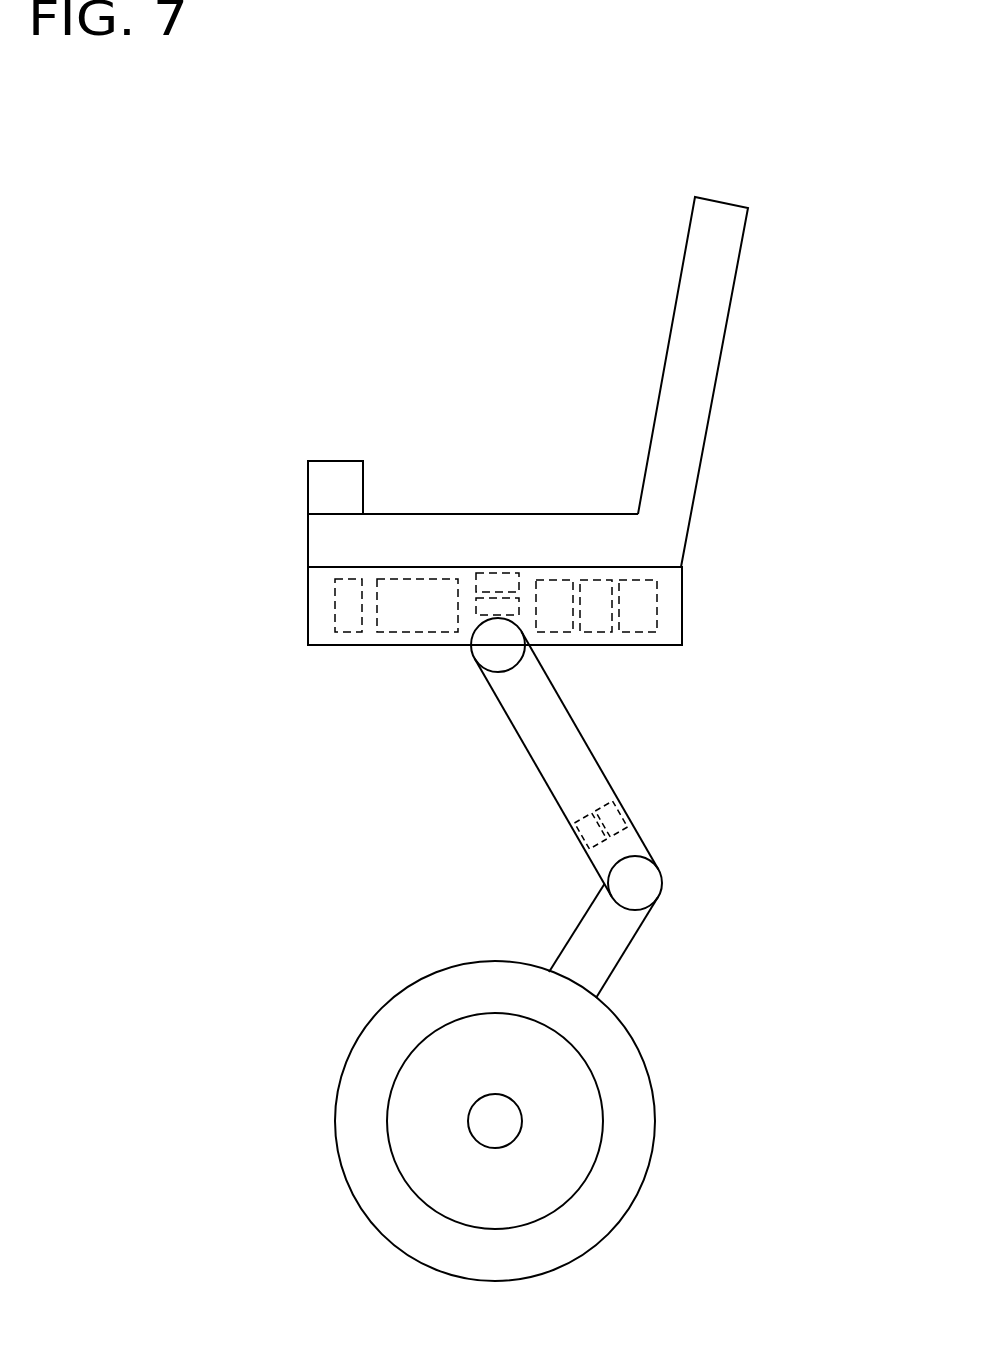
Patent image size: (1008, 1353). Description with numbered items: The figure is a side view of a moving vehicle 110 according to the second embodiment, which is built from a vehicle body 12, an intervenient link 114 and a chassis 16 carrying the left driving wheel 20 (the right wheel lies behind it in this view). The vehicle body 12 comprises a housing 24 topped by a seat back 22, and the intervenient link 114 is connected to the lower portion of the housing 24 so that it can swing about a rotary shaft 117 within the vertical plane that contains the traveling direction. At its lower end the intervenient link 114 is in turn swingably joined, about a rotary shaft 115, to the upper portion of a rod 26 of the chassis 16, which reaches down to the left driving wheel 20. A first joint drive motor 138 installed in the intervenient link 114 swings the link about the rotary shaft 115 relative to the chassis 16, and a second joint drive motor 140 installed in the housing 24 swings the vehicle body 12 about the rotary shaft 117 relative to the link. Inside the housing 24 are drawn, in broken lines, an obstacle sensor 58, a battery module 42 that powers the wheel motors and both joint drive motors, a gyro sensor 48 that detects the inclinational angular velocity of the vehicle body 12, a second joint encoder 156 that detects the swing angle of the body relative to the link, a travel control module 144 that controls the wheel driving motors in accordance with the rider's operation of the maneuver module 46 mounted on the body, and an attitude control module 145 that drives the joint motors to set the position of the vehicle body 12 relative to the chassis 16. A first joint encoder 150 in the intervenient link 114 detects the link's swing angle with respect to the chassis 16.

The moving vehicle 110 is at (536, 124).
The vehicle body 12 is at (748, 492).
The chassis 16 is at (700, 966).
The left driving wheel 20 is at (653, 1122).
The seat back 22 is at (717, 387).
The housing 24 is at (682, 630).
The rod 26 is at (580, 922).
The battery module 42 is at (408, 577).
The maneuver module 46 is at (335, 460).
The gyro sensor 48 is at (495, 567).
The obstacle sensor 58 is at (330, 603).
The intervenient link 114 is at (602, 775).
The rotary shaft 115 is at (633, 883).
The rotary shaft 117 is at (500, 653).
The first joint drive motor 138 is at (628, 813).
The second joint drive motor 140 is at (476, 613).
The travel control module 144 is at (595, 577).
The attitude control module 145 is at (657, 590).
The first joint encoder 150 is at (577, 833).
The second joint encoder 156 is at (553, 577).